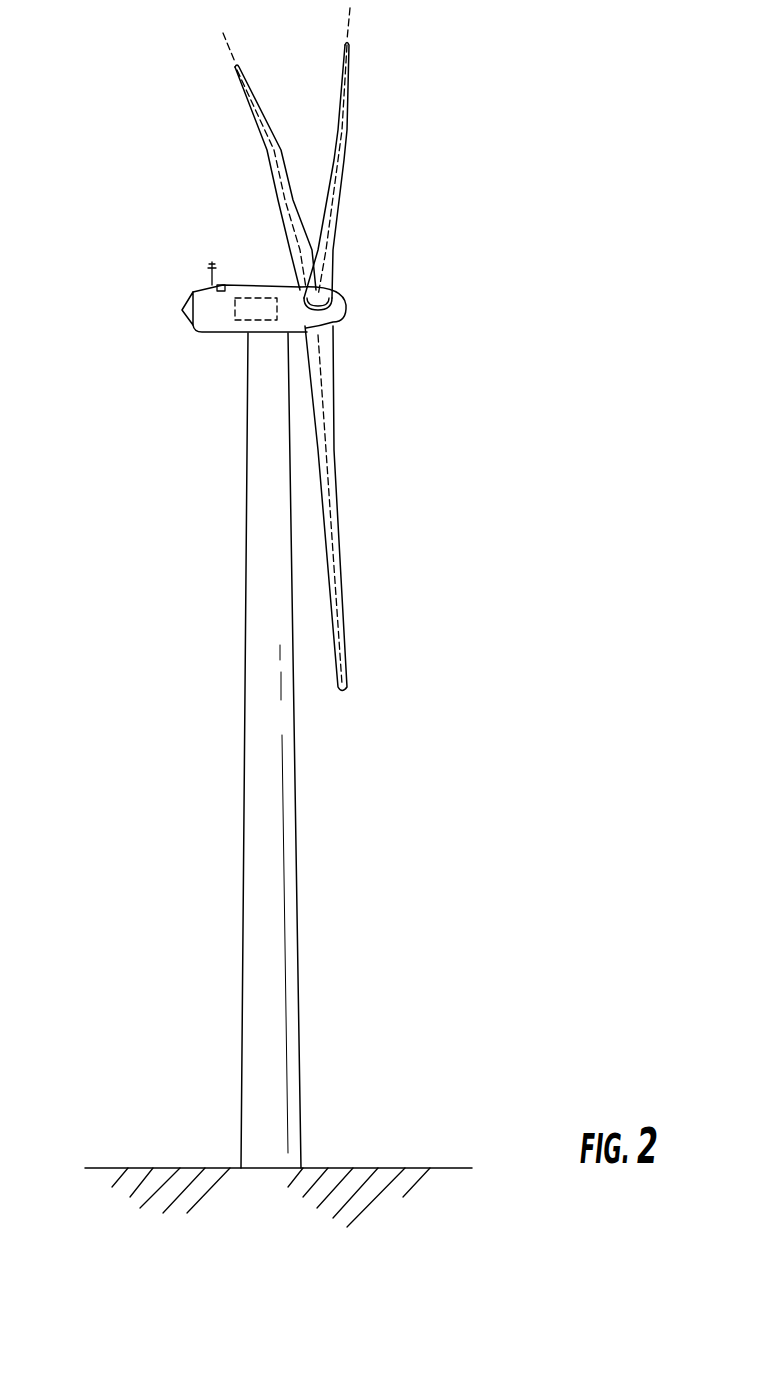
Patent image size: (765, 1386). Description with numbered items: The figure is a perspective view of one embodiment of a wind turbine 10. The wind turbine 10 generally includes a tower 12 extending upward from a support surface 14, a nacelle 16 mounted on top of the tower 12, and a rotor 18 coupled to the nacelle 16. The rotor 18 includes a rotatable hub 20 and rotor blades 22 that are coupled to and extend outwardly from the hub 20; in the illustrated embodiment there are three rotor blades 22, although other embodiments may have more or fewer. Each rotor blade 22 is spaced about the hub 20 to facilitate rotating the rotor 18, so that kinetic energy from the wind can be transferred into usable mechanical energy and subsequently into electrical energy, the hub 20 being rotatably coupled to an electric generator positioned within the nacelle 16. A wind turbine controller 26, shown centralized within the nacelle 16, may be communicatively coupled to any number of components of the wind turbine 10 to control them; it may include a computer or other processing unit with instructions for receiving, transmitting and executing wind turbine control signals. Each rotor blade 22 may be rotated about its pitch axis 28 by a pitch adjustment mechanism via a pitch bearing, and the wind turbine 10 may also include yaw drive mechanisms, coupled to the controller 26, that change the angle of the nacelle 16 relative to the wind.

The wind turbine 10 is at (531, 137).
The tower 12 is at (257, 867).
The support surface 14 is at (168, 1168).
The nacelle 16 is at (223, 337).
The rotor 18 is at (351, 279).
The rotatable hub 20 is at (342, 312).
The rotor blade 22 is at (332, 153).
The wind turbine controller 26 is at (253, 297).
The pitch axis 28 is at (272, 187).